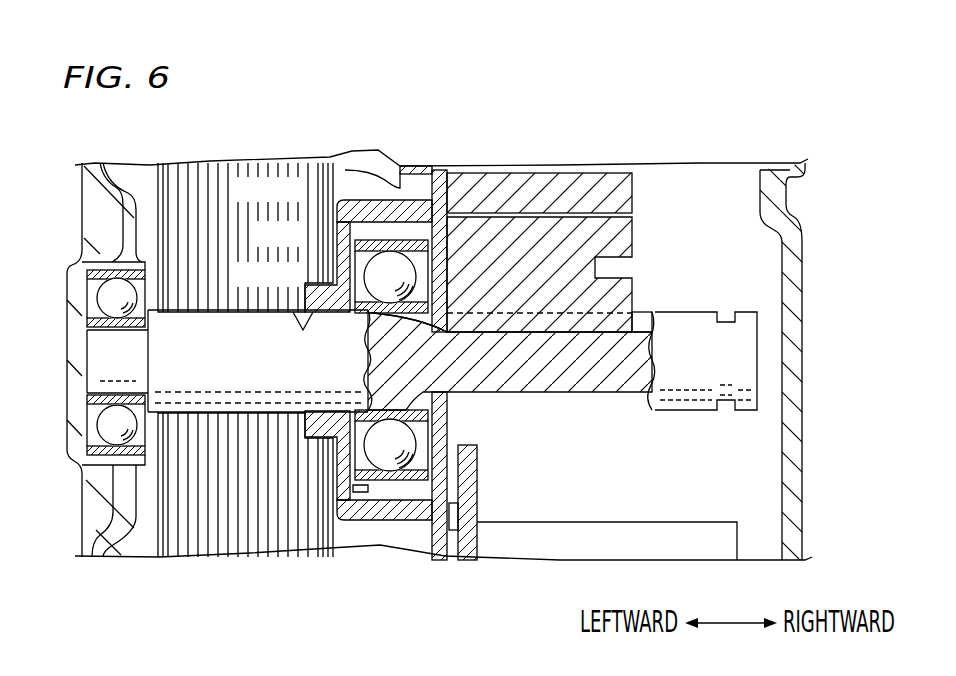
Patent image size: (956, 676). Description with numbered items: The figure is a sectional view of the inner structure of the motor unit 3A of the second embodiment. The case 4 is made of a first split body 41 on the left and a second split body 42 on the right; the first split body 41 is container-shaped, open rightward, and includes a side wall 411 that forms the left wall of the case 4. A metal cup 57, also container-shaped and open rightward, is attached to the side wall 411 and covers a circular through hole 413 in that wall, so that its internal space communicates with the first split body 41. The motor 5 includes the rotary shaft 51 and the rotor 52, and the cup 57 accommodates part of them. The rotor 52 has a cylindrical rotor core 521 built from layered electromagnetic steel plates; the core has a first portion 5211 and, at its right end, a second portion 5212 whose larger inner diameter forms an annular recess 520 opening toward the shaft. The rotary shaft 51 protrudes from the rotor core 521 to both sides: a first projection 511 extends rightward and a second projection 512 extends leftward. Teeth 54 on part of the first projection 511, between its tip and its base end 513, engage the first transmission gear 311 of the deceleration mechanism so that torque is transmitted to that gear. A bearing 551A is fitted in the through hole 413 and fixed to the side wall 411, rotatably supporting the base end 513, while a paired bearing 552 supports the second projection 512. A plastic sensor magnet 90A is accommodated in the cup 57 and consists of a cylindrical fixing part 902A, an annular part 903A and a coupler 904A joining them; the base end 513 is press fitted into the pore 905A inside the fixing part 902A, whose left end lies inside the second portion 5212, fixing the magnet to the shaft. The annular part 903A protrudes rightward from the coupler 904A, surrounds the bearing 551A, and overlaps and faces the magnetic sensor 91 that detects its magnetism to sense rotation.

The motor unit 3A is at (810, 446).
The case 4 is at (813, 361).
The second split body 42 is at (807, 307).
The cup 57 is at (75, 360).
The bearing 552 is at (98, 421).
The motor 5 is at (382, 407).
The rotor 52 is at (264, 407).
The rotor core 521 is at (237, 533).
The first portion 5211 is at (212, 517).
The second portion 5212 is at (318, 507).
The rotary shaft 51 is at (382, 335).
The second projection 512 is at (103, 368).
The base end 513 is at (345, 330).
The first projection 511 is at (612, 368).
The teeth 54 is at (642, 322).
The first transmission gear 311 is at (588, 226).
The first split body 41 is at (484, 398).
The side wall 411 is at (403, 500).
The through hole 413 is at (418, 260).
The bearing 551A is at (424, 437).
The magnetic sensor 91 is at (458, 512).
The coupler 904A is at (333, 222).
The pore 905A is at (300, 325).
The fixing part 902A is at (318, 423).
The recess 520 is at (366, 492).
The sensor magnet 90A is at (346, 172).
The annular part 903A is at (423, 197).